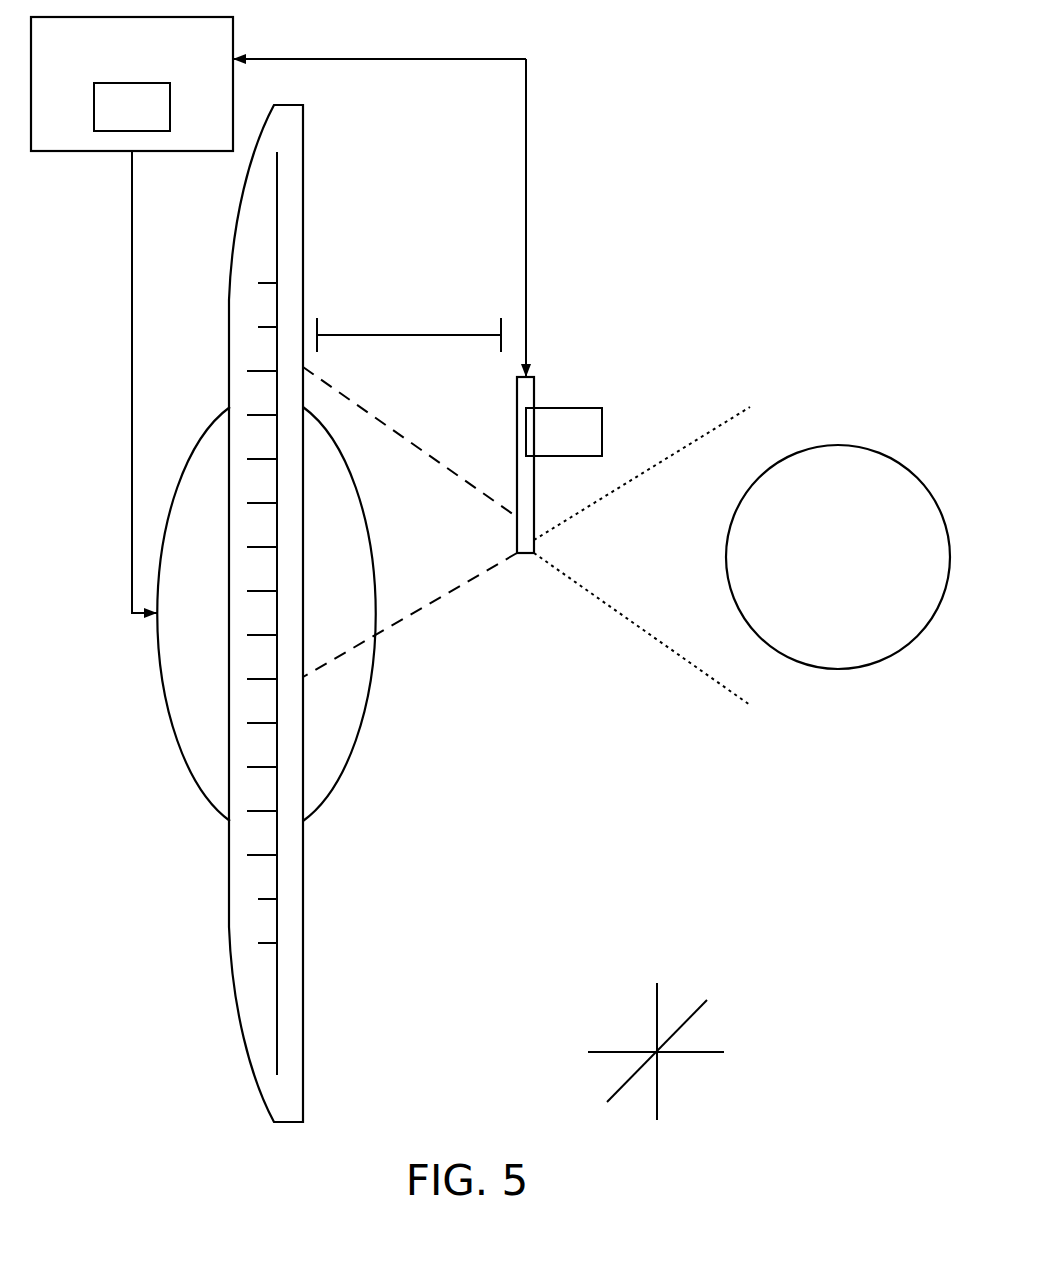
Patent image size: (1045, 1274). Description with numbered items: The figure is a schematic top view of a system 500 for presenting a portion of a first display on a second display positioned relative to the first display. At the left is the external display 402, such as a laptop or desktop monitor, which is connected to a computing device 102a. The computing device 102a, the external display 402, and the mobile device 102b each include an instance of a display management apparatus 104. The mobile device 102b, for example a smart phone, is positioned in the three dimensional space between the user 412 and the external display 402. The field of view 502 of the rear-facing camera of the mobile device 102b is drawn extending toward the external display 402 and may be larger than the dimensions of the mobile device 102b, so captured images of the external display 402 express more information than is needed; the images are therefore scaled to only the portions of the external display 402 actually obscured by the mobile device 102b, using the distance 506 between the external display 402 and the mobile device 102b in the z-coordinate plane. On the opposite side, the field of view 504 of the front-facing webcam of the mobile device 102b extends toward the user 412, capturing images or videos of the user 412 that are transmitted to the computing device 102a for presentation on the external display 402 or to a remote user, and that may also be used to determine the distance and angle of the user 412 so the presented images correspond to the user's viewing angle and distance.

The system 500 is at (793, 90).
The computing device 102a is at (107, 75).
The mobile device 102b is at (534, 383).
The display management apparatus 104 is at (113, 120).
The external display 402 is at (232, 958).
The user 412 is at (818, 571).
The field of view of rear-facing camera 502 is at (428, 463).
The field of view of front-facing webcam 504 is at (595, 590).
The distance 506 is at (406, 322).